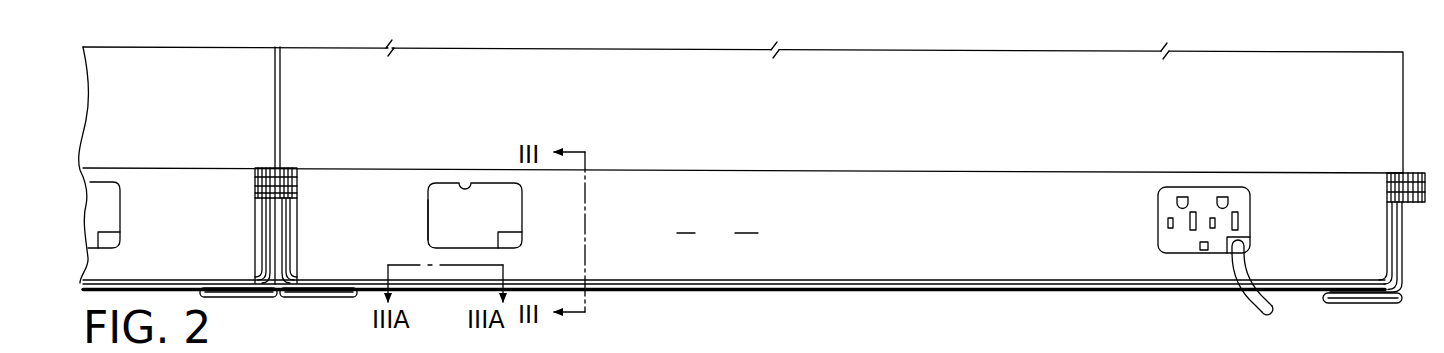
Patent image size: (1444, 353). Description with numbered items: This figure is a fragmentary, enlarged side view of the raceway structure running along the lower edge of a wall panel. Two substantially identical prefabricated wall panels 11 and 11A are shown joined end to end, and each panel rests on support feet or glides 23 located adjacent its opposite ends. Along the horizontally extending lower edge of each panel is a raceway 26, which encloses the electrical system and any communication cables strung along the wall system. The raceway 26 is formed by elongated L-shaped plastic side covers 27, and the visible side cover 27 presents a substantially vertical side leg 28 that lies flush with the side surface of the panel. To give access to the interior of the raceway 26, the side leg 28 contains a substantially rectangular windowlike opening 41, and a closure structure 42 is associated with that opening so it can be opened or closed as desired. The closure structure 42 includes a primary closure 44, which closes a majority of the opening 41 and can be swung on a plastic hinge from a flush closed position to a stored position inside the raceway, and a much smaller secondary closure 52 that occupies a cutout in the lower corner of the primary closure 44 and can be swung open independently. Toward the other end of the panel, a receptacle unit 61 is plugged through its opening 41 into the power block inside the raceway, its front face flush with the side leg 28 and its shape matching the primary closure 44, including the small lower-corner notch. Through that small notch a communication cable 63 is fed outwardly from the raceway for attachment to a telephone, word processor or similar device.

The wall panel 11 is at (862, 49).
The wall panel 11A is at (200, 46).
The support feet or glides 23 is at (233, 295).
The raceway 26 is at (878, 291).
The side cover 27 is at (955, 193).
The side leg 28 is at (717, 235).
The windowlike opening 41 is at (460, 188).
The closure structure 42 is at (428, 203).
The primary closure 44 is at (436, 233).
The secondary closure 52 is at (513, 240).
The receptacle unit 61 is at (1207, 195).
The communication cable 63 is at (1245, 273).